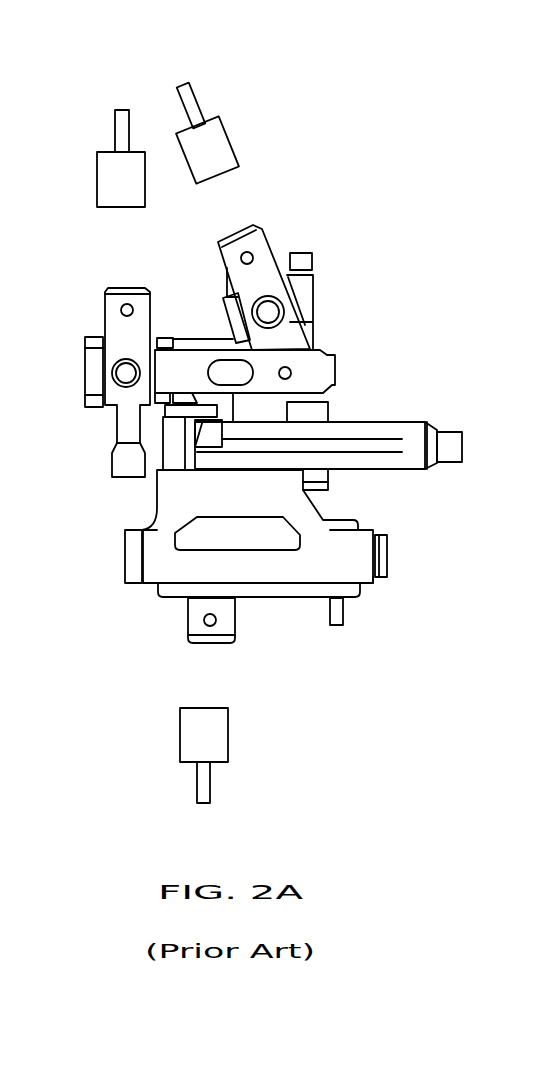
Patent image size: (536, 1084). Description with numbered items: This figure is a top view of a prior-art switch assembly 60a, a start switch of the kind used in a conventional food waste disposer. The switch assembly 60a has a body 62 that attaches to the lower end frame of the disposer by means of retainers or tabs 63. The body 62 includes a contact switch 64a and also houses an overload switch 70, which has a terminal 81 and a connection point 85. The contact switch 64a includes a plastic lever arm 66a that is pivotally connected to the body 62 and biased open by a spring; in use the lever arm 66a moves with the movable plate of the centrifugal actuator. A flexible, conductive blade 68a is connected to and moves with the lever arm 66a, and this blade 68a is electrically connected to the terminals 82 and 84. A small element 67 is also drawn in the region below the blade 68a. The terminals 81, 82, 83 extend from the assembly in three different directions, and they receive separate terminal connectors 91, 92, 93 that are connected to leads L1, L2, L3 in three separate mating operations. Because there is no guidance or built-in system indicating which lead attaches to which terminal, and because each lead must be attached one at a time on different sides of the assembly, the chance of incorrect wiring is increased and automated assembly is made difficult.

The switch assembly 60a is at (90, 380).
The body 62 is at (373, 578).
The retainers or tabs 63 is at (303, 253).
The contact switch 64a is at (334, 429).
The plastic lever arm 66a is at (415, 470).
The pin block 67 is at (315, 398).
The flexible conductive blade 68a is at (336, 357).
The overload switch 70 is at (275, 598).
The terminal 81 is at (207, 644).
The terminal 82 is at (127, 287).
The terminal 83 is at (234, 234).
The terminal 84 is at (125, 478).
The connection point 85 is at (335, 626).
The terminal connector 91 is at (230, 737).
The terminal connector 92 is at (97, 176).
The terminal connector 93 is at (229, 140).
The lead L1 is at (212, 787).
The lead L2 is at (115, 125).
The lead L3 is at (198, 95).